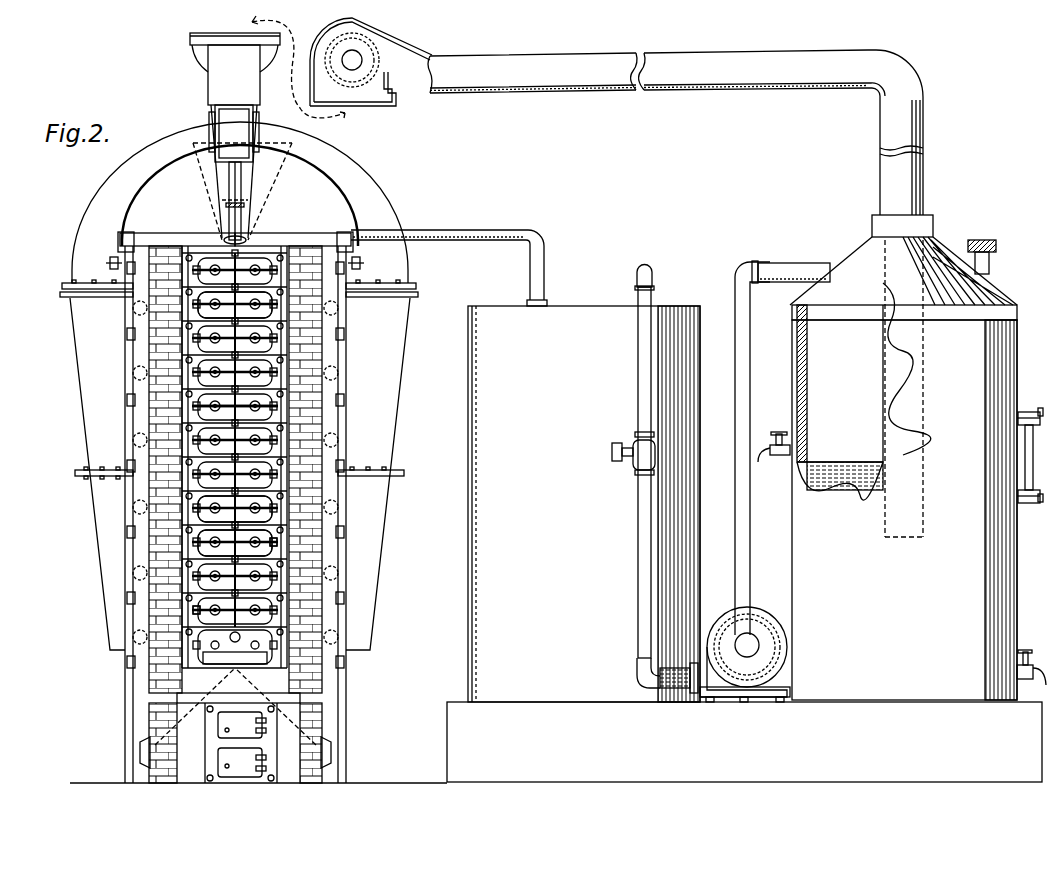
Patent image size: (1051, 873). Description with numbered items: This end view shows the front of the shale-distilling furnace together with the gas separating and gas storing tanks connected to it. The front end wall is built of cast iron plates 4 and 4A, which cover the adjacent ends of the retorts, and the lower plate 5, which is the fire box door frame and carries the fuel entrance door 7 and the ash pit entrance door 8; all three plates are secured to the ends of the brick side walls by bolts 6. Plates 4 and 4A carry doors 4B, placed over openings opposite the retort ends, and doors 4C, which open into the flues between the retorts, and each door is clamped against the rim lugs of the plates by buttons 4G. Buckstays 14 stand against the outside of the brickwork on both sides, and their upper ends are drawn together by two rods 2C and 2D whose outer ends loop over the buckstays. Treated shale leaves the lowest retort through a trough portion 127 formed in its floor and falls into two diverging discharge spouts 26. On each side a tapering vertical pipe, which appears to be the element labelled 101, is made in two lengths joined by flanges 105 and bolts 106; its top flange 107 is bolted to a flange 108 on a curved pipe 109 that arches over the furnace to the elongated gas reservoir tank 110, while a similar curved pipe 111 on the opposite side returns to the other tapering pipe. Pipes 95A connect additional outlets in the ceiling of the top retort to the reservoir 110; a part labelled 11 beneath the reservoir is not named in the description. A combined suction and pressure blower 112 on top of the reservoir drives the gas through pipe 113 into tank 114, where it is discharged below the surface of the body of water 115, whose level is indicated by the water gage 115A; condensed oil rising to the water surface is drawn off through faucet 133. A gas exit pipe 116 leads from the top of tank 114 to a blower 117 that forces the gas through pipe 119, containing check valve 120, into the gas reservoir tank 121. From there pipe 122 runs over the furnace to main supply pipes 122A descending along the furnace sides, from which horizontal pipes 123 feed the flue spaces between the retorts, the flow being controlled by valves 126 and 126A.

The rod 2C is at (165, 238).
The rod 2D is at (300, 238).
The cast iron plate 4 is at (186, 350).
The cast iron plate 4A is at (262, 492).
The door 4B is at (212, 315).
The door 4C is at (212, 538).
The button 4G is at (198, 610).
The fire box door frame plate 5 is at (242, 700).
The bolts 6 is at (188, 248).
The fuel entrance door 7 is at (222, 720).
The ash pit entrance door 8 is at (222, 757).
The feed pipe 11 is at (250, 236).
The buckstays 14 is at (146, 408).
The discharge outlet spouts 26 is at (140, 752).
The pipes 95A is at (250, 197).
The outer casing 101 is at (86, 358).
The flanges 105 is at (75, 473).
The bolts 106 is at (104, 468).
The flange 107 is at (60, 294).
The flange 108 is at (68, 283).
The curved pipe 109 is at (106, 172).
The gas reservoir tank 110 is at (210, 112).
The curved pipe 111 is at (362, 178).
The combined suction and pressure blower 112 is at (384, 52).
The pipe 113 is at (545, 70).
The tank 114 is at (918, 457).
The body of water 115 is at (834, 488).
The water gage 115A is at (1025, 433).
The gas exit pipe 116 is at (782, 265).
The blower 117 is at (722, 690).
The pipe 119 is at (638, 522).
The check valve 120 is at (612, 450).
The gas reservoir tank 121 is at (568, 320).
The pipe 122 is at (454, 232).
The main gas supply pipes 122A is at (118, 244).
The horizontally extending pipes 123 is at (127, 396).
The valve 126 is at (360, 263).
The valve 126A is at (110, 263).
The trough portion 127 is at (234, 646).
The faucet 133 is at (762, 462).